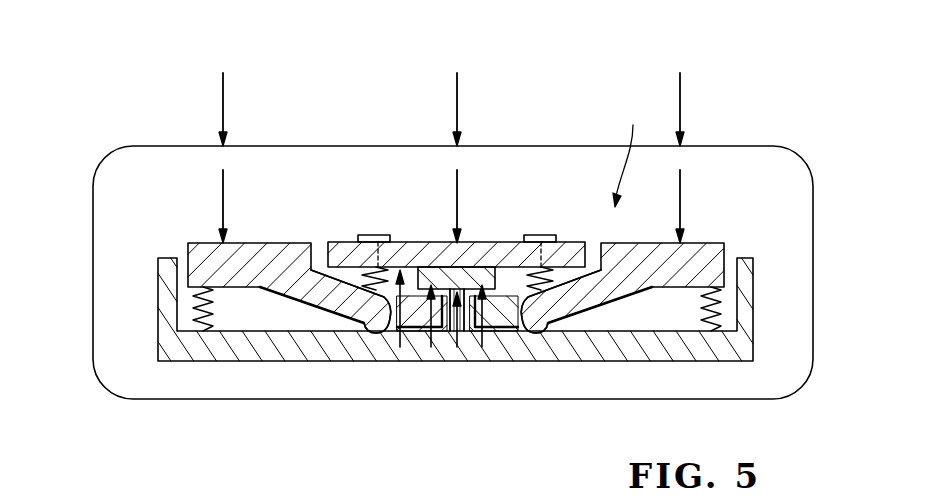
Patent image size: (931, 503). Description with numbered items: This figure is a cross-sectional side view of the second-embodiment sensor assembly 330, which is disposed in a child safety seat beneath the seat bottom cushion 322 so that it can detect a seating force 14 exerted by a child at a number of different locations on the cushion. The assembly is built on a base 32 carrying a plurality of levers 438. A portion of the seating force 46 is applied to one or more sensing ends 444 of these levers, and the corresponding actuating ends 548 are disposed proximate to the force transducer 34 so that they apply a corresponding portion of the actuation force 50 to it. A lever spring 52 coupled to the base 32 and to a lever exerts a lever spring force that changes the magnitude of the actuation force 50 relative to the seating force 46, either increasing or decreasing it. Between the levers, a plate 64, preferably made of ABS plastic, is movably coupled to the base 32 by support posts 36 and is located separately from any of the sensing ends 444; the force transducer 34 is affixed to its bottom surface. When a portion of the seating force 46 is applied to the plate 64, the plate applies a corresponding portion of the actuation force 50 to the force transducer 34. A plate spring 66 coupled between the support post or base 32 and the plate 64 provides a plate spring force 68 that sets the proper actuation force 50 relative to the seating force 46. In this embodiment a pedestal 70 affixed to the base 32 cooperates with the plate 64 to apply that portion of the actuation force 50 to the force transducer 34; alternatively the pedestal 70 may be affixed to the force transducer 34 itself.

The seating force 14 is at (223, 92).
The seat bottom cushion 322 is at (298, 146).
The sensing ends 444 is at (195, 242).
The seating force 46 is at (223, 215).
The force transducer 34 is at (451, 292).
The support posts 36 is at (378, 235).
The plate 64 is at (343, 242).
The sensor assembly 330 is at (633, 155).
The lever spring 52 is at (195, 308).
The base 32 is at (197, 357).
The plurality of levers 438 is at (285, 277).
The plate spring 66 is at (330, 311).
The plate spring force 68 is at (422, 292).
The actuation force 50 is at (398, 335).
The actuating ends 548 is at (432, 302).
The pedestal 70 is at (458, 315).